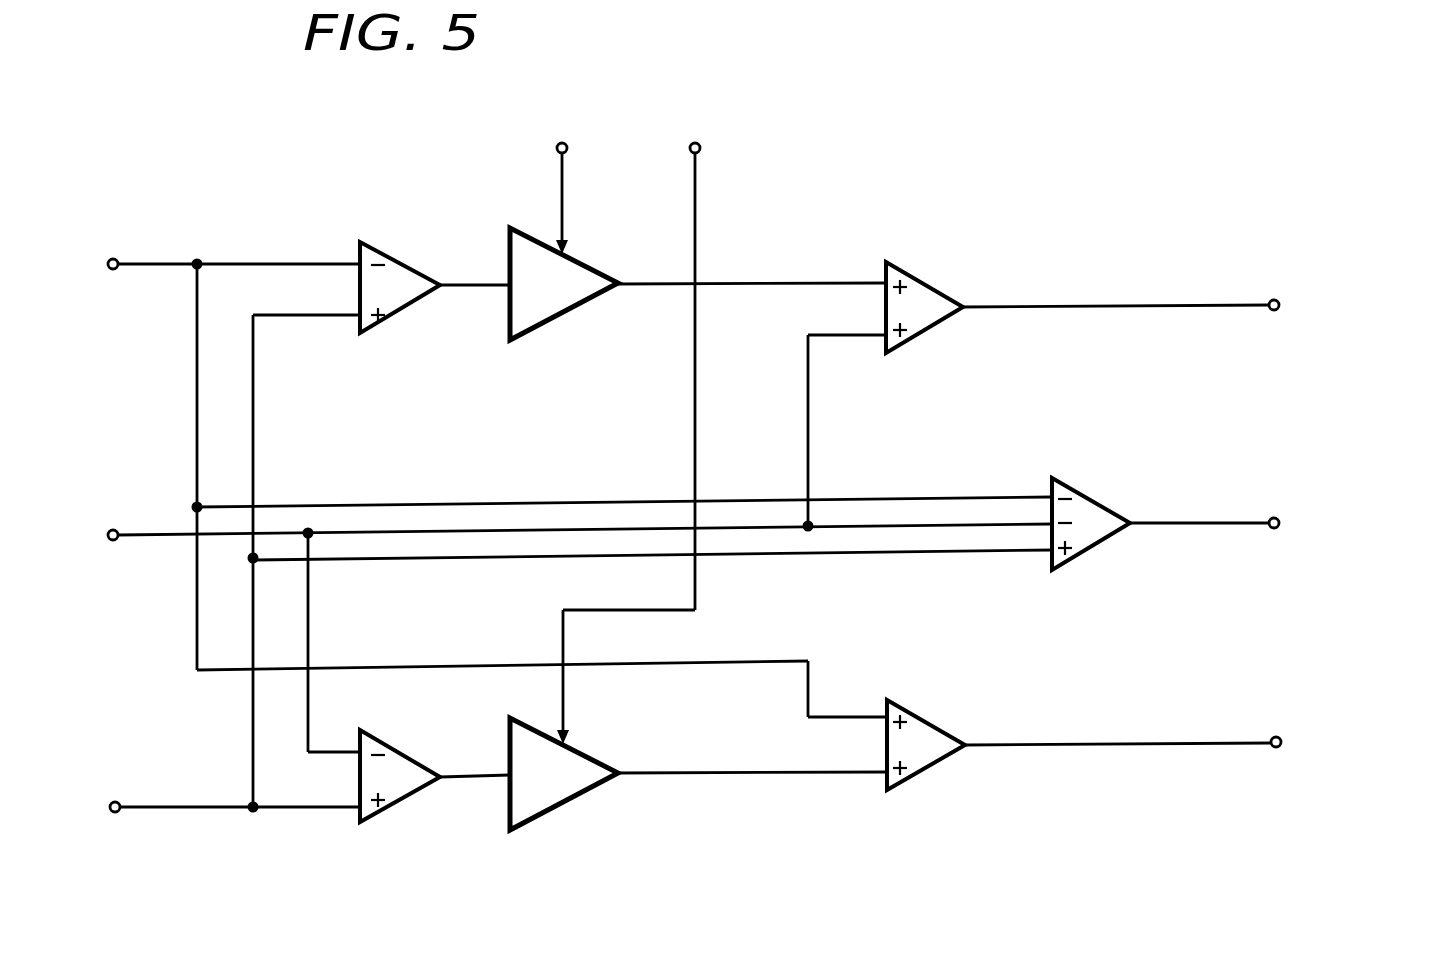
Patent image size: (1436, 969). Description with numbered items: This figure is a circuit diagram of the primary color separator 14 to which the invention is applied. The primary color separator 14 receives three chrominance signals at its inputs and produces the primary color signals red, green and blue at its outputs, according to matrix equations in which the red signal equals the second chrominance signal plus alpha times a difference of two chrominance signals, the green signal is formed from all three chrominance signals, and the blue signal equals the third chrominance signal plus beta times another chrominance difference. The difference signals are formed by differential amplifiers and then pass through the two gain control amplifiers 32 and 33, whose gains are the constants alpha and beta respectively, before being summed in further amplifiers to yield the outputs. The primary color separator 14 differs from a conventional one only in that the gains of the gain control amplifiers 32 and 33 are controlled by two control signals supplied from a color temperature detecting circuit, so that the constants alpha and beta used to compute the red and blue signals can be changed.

The primary color separator 14 is at (930, 188).
The gain control amplifier 32 is at (595, 268).
The gain control amplifier 33 is at (592, 788).